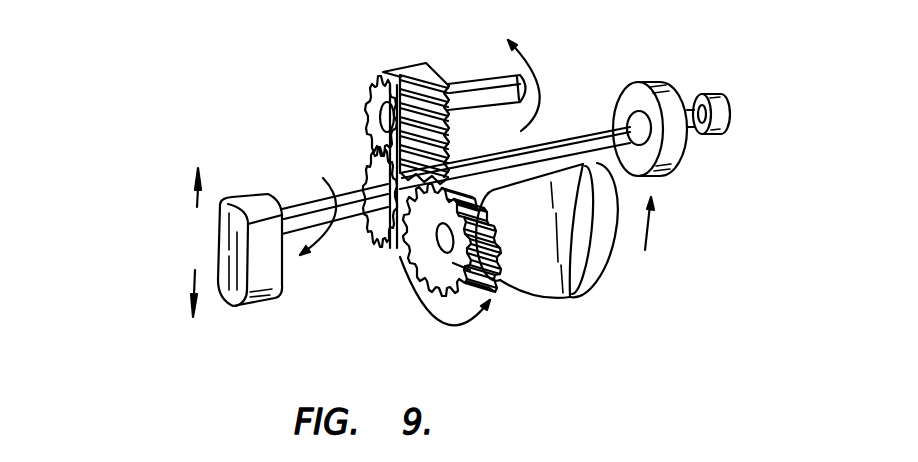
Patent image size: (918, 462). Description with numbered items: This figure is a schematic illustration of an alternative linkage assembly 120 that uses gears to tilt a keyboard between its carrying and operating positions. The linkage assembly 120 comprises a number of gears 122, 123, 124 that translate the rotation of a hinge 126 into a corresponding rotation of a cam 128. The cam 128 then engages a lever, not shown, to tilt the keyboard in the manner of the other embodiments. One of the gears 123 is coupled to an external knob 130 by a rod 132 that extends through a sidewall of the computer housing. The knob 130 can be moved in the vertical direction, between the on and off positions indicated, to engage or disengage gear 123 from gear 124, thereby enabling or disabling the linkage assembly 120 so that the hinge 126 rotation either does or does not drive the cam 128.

The linkage assembly 120 is at (405, 192).
The gear 122 is at (382, 116).
The gear 123 is at (377, 173).
The gear 124 is at (490, 278).
The hinge 126 is at (492, 90).
The cam 128 is at (598, 263).
The external knob 130 is at (249, 305).
The rod 132 is at (301, 212).